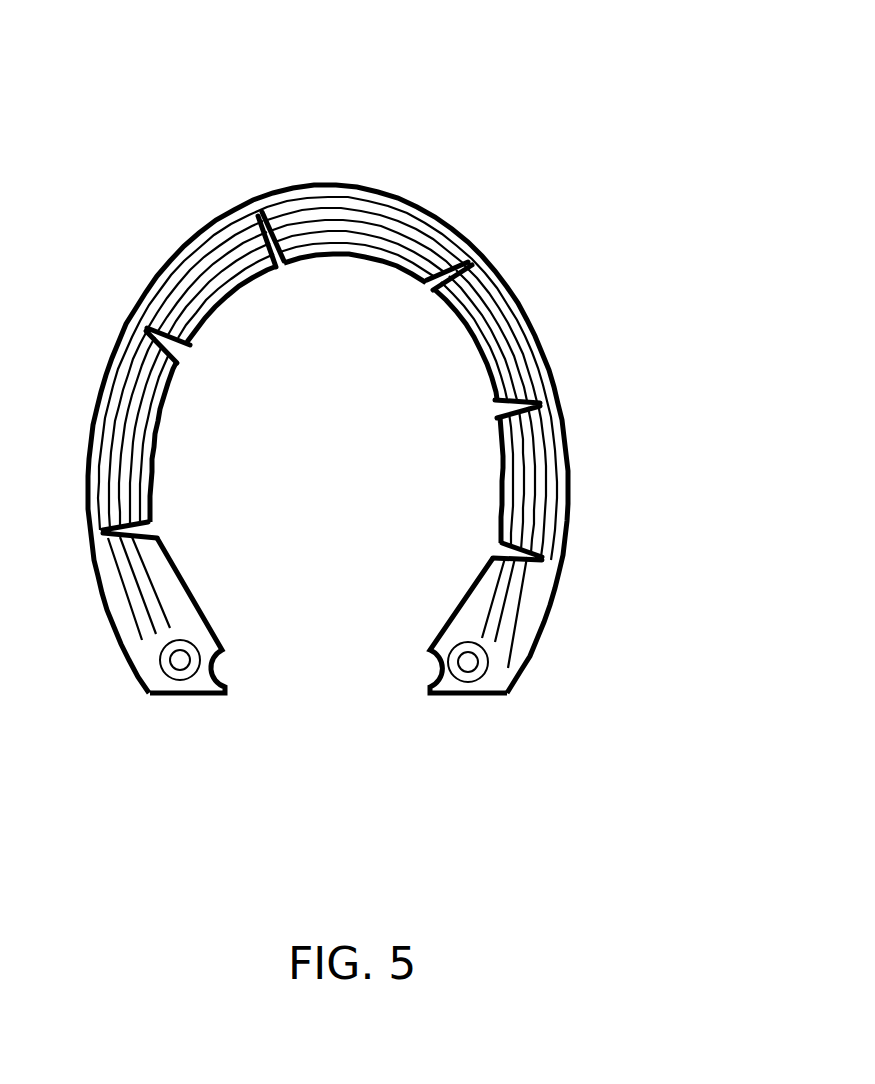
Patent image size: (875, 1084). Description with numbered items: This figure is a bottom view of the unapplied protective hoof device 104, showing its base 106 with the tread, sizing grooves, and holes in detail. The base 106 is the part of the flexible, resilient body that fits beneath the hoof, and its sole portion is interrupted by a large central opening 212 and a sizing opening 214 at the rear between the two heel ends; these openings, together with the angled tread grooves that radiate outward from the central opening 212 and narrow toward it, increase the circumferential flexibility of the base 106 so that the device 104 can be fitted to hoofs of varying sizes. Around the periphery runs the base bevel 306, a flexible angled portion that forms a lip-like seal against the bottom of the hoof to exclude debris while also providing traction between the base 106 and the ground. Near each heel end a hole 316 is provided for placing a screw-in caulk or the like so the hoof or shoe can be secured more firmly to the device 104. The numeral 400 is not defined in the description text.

The device 104 is at (520, 150).
The base 106 is at (477, 258).
The central opening 212 is at (218, 452).
The sizing opening 214 is at (227, 707).
The base bevel 306 is at (523, 327).
The shoe segment 400 is at (542, 485).
The holes 316 is at (483, 668).